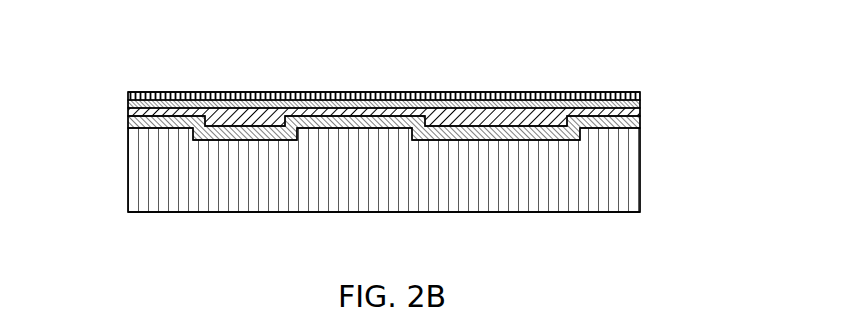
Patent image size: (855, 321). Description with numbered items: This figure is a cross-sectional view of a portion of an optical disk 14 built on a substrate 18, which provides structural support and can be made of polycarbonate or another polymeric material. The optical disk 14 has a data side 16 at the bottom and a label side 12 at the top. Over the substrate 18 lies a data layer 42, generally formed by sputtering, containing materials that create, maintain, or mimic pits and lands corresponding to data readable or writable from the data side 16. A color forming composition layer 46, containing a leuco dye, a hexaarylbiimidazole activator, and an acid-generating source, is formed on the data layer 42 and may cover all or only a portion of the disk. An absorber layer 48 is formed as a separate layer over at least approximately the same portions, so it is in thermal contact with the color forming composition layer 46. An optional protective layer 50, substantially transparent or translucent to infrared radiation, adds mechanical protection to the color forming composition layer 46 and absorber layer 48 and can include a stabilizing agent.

The optical disk 14 is at (110, 86).
The label side 12 is at (302, 84).
The data side 16 is at (310, 218).
The substrate 18 is at (622, 180).
The data layer 42 is at (640, 130).
The color forming composition layer 46 is at (640, 112).
The absorber layer 48 is at (640, 104).
The protective layer 50 is at (640, 95).